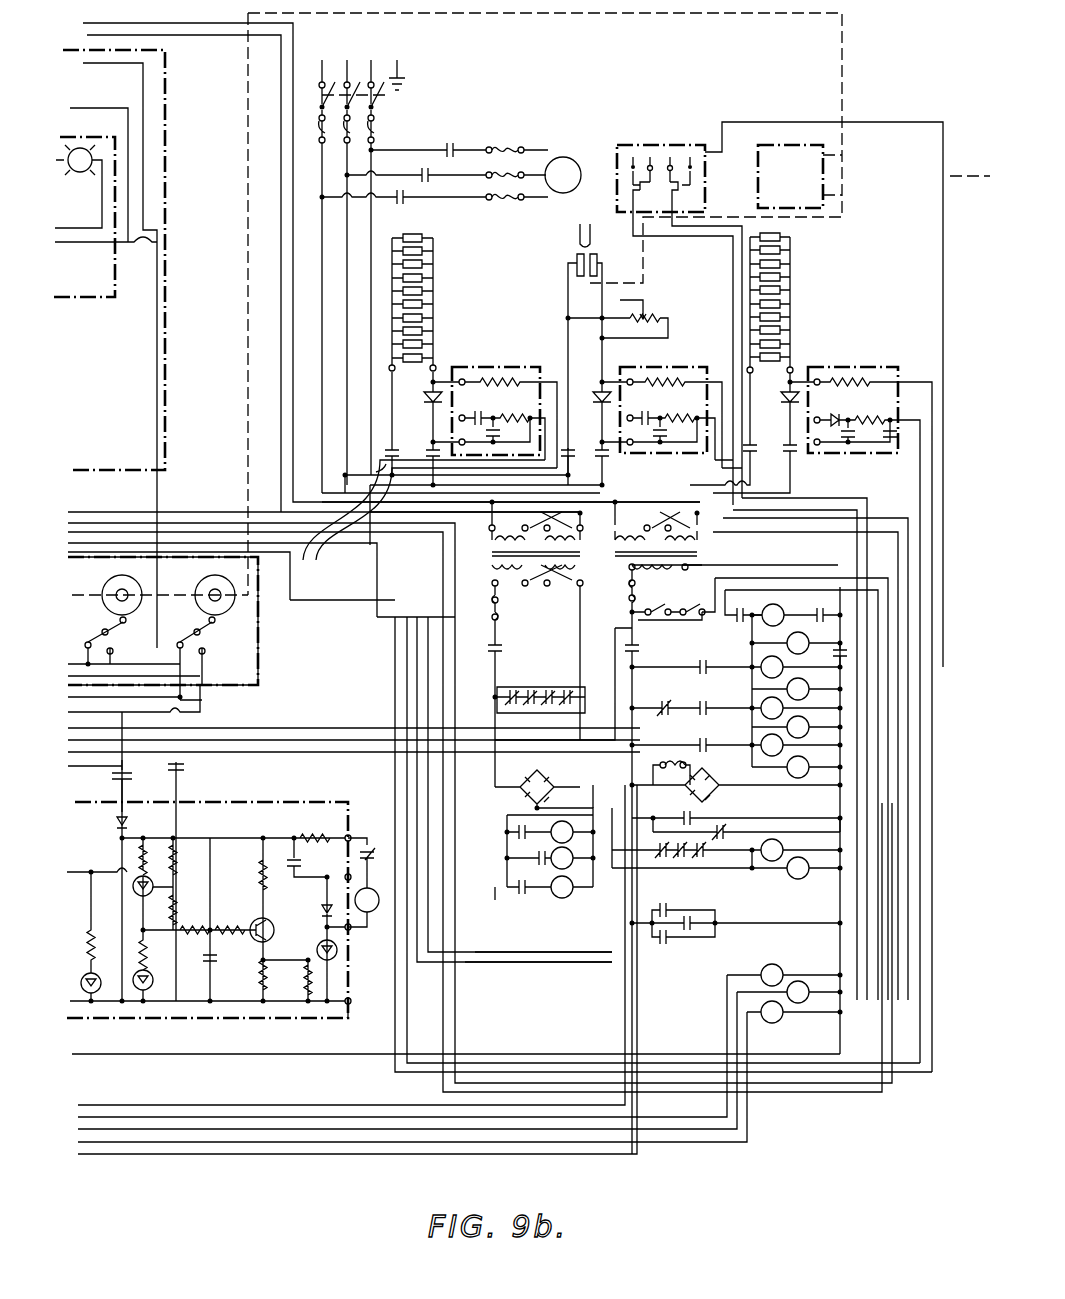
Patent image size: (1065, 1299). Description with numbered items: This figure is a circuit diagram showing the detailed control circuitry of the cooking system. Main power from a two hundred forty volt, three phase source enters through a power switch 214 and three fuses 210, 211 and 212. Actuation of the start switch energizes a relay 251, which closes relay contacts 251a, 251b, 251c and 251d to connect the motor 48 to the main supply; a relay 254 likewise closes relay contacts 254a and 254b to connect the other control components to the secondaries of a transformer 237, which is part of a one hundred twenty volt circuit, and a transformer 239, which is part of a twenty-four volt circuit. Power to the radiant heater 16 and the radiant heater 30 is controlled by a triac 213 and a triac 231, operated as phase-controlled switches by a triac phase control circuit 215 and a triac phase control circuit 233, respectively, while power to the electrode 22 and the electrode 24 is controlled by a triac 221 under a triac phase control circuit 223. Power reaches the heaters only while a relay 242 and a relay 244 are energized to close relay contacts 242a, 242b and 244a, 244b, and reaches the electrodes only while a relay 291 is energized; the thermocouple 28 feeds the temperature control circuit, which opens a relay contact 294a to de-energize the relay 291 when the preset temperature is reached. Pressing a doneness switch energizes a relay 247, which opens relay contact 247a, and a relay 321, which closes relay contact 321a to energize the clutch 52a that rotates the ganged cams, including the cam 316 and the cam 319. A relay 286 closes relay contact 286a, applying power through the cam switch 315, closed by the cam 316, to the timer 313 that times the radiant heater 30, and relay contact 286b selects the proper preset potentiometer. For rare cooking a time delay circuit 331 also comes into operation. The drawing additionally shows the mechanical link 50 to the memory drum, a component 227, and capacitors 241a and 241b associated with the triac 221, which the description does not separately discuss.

The timer 313 is at (66, 304).
The fuse 210 is at (314, 276).
The fuse 211 is at (342, 272).
The fuse 212 is at (376, 134).
The power switch 214 is at (384, 101).
The relay contact 251b is at (454, 126).
The relay contact 251c is at (421, 168).
The relay contact 251d is at (403, 200).
The motor 48 is at (567, 150).
The clutch 52a is at (640, 145).
The memory drum mechanical link 50 is at (792, 145).
The thermocouple 28 is at (577, 238).
The electrode 22 is at (574, 262).
The electrode 24 is at (600, 262).
The radiant heater 16 is at (453, 326).
The potentiometer 227 is at (648, 313).
The radiant heater 30 is at (810, 307).
The triac phase control circuit 215 is at (470, 360).
The triac phase control circuit 223 is at (640, 362).
The triac phase control circuit 233 is at (826, 362).
The triac 213 is at (424, 404).
The triac 221 is at (593, 404).
The triac 231 is at (781, 404).
The relay contact 242a is at (432, 447).
The relay contact 242b is at (406, 427).
The capacitor 241a is at (585, 462).
The capacitor 241b is at (606, 456).
The relay contact 244a is at (739, 429).
The relay contact 244b is at (798, 450).
The cam 316 is at (108, 572).
The cam 319 is at (205, 572).
The cam switch 315 is at (118, 633).
The transformer 239 is at (486, 562).
The transformer 237 is at (700, 552).
The relay contact 254b is at (500, 650).
The relay contact 247a is at (584, 668).
The relay 251 is at (798, 587).
The relay contact 254a is at (640, 650).
The relay contact 251a is at (734, 622).
The relay 254 is at (788, 632).
The relay 242 is at (762, 658).
The relay contact 294a is at (656, 700).
The relay 291 is at (762, 699).
The relay 244 is at (762, 738).
The time delay circuit 331 is at (336, 799).
The relay contact 321a is at (688, 802).
The relay 321 is at (783, 846).
The relay 247 is at (790, 878).
The relay contact 286b is at (533, 870).
The relay contact 286a is at (698, 896).
The relay 286 is at (820, 966).